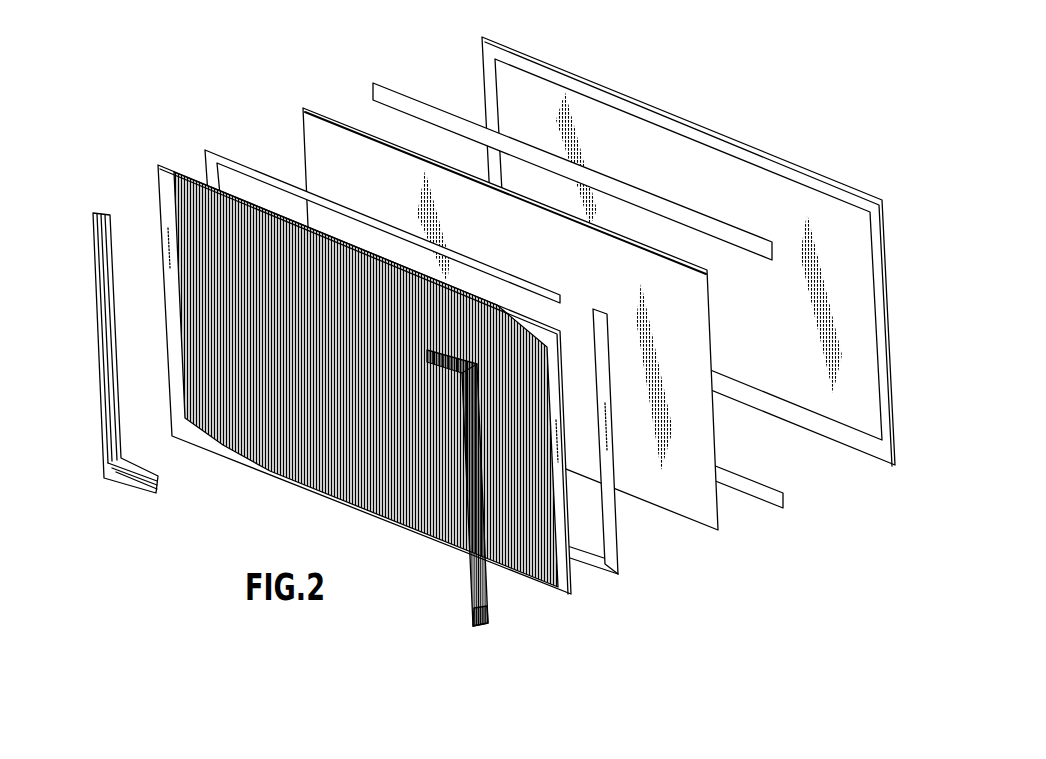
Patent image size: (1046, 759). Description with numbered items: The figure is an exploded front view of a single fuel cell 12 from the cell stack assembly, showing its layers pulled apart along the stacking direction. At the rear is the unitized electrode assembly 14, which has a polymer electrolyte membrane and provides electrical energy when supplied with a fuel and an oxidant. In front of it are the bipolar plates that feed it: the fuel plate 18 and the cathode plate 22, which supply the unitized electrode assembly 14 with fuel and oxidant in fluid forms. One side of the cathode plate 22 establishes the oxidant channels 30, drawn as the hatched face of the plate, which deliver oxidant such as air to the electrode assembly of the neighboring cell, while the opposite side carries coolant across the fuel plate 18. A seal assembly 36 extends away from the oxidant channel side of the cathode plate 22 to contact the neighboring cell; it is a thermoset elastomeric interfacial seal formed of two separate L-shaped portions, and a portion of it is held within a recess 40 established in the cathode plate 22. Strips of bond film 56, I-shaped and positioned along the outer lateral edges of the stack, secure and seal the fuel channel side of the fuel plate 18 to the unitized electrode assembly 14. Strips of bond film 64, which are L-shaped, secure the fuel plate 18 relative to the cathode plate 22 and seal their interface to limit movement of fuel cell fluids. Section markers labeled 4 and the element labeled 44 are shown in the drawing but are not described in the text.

The fuel cell 12 is at (508, 356).
The unitized electrode assembly 14 is at (897, 445).
The fuel plate 18 is at (718, 523).
The cathode plate 22 is at (416, 389).
The oxidant channels 30 is at (525, 548).
The seal assembly 36 is at (490, 623).
The recess 40 is at (560, 500).
The support leg 44 is at (479, 513).
The strips of bond film 56 is at (783, 500).
The strips of bond film 64 is at (613, 568).
The section line 4- 4 is at (63, 305).